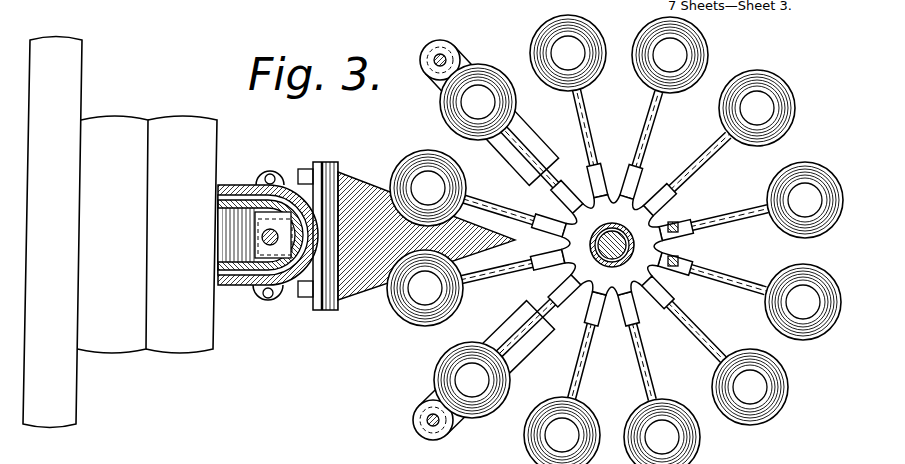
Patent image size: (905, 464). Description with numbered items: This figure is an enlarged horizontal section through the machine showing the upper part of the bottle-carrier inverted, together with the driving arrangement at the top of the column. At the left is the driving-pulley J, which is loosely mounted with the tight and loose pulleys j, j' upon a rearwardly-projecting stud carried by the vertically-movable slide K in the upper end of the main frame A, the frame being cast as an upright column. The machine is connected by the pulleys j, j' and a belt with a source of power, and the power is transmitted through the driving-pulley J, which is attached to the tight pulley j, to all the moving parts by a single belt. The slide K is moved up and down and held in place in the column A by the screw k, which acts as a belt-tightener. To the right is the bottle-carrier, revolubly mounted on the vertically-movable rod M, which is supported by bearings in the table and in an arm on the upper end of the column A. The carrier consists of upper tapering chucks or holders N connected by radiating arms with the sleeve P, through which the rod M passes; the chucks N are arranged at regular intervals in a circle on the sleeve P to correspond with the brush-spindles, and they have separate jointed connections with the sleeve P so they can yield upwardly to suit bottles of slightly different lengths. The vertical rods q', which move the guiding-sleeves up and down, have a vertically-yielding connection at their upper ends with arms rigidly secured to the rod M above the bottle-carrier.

The driving-pulley J is at (52, 232).
The tight pulley j is at (113, 234).
The loose pulley j' is at (181, 234).
The main frame A is at (243, 187).
The vertically-movable slide K is at (253, 289).
The screw k is at (278, 236).
The vertical rods q' is at (470, 240).
The upper chucks or holders N is at (436, 151).
The sleeve P is at (631, 166).
The vertically-movable rod M is at (672, 250).